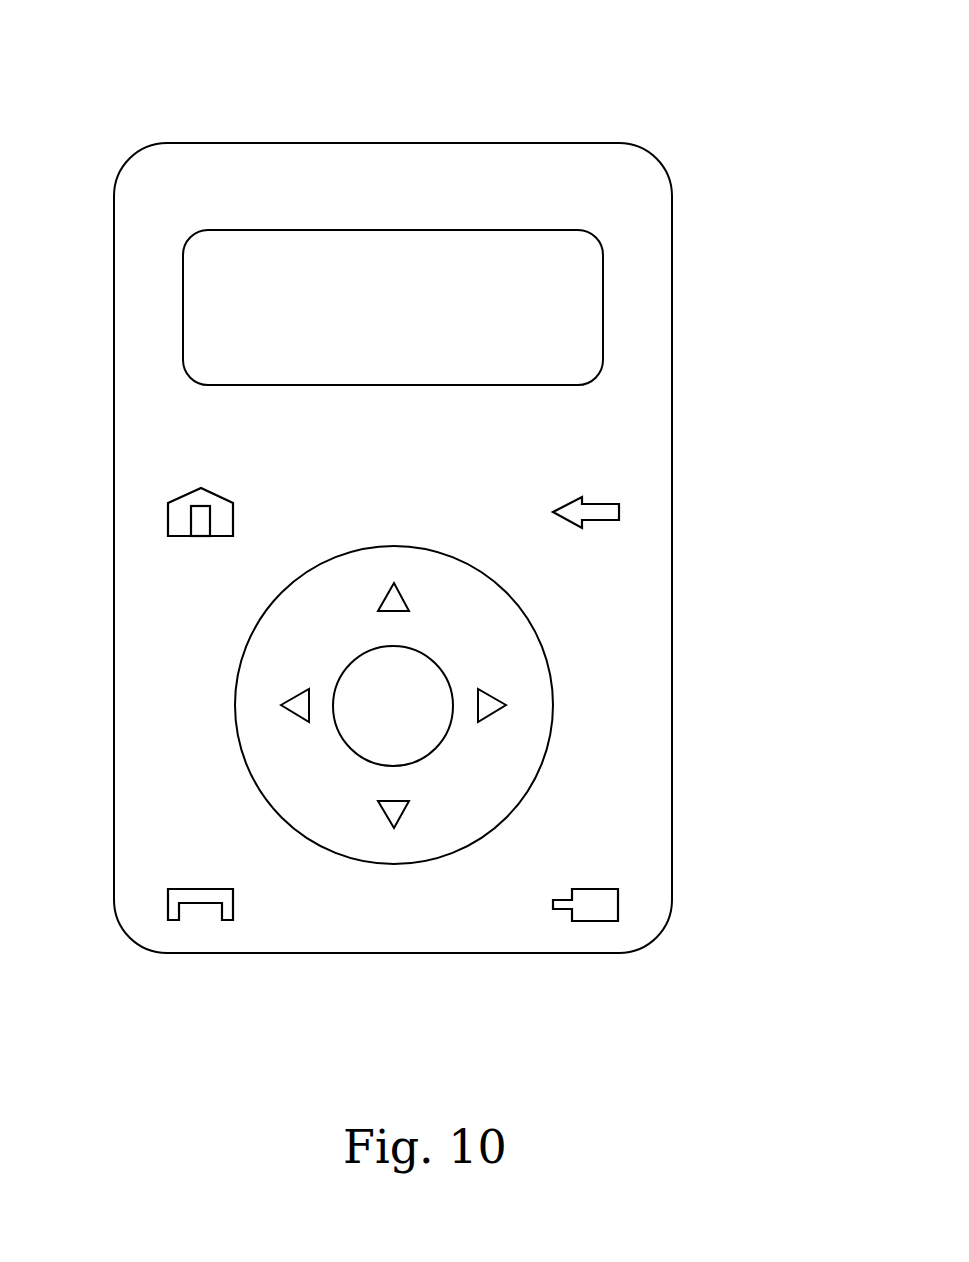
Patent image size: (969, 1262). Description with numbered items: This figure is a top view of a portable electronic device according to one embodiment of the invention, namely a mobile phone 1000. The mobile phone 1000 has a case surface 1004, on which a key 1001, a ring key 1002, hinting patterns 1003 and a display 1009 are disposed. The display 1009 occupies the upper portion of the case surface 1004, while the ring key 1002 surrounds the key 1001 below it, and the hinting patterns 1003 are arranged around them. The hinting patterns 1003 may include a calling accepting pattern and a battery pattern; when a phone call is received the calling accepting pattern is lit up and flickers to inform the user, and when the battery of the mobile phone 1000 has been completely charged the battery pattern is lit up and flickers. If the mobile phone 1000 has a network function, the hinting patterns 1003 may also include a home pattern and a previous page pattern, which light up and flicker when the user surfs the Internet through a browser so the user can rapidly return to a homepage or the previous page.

The mobile phone 1000 is at (714, 104).
The key 1001 is at (417, 682).
The ring key 1002 is at (242, 697).
The hinting patterns 1003 is at (187, 503).
The case surface 1004 is at (648, 770).
The display 1009 is at (593, 291).